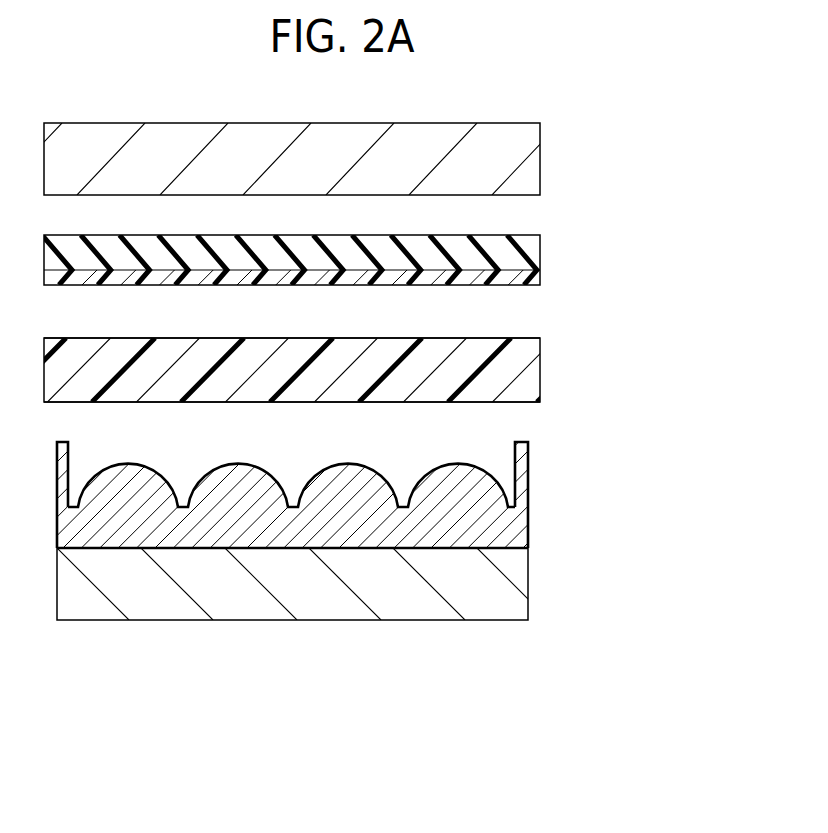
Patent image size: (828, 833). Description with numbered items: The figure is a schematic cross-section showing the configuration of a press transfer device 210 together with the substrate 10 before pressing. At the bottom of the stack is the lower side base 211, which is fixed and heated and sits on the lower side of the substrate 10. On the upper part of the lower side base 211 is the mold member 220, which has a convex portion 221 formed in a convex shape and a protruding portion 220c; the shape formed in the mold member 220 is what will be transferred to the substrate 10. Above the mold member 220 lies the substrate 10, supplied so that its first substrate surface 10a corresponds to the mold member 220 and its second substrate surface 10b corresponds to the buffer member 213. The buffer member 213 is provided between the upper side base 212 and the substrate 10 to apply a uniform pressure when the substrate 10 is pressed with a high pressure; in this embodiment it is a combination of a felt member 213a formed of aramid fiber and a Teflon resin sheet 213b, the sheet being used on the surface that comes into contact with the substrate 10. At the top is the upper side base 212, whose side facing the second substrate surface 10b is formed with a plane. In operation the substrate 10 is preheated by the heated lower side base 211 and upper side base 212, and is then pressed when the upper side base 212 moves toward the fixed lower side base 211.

The press transfer device 210 is at (377, 370).
The upper side base 212 is at (530, 172).
The buffer member 213 is at (367, 260).
The felt member 213a is at (532, 247).
The Teflon resin sheet 213b is at (533, 277).
The substrate 10 is at (313, 370).
The first substrate surface 10a is at (525, 402).
The second substrate surface 10b is at (525, 338).
The mold member 220 is at (321, 488).
The protruding portion 220c is at (520, 463).
The convex portion 221 is at (478, 485).
The lower side base 211 is at (340, 584).